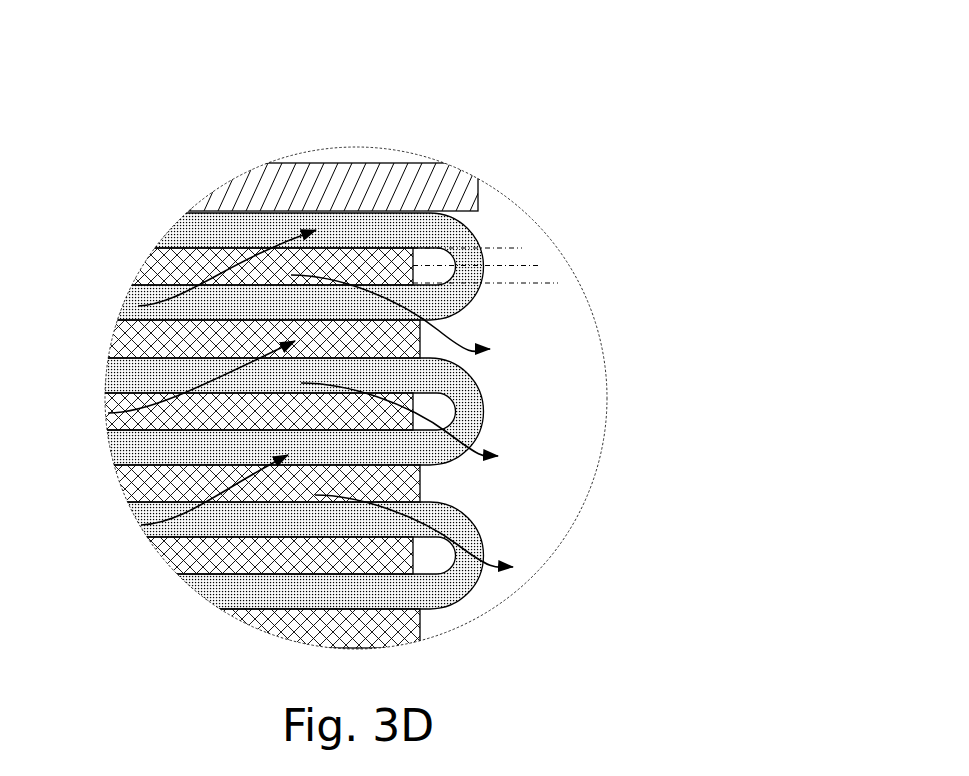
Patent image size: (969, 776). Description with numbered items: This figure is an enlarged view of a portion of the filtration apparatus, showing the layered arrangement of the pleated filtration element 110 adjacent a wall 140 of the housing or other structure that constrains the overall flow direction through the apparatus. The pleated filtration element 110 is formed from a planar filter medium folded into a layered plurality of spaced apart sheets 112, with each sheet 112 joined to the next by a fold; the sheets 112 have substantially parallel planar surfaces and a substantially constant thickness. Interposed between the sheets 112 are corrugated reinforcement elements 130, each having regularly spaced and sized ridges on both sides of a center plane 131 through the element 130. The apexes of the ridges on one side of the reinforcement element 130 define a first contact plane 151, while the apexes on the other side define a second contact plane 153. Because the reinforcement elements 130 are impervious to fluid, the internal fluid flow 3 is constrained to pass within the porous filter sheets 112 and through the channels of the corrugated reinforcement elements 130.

The internal fluid flow 3 is at (130, 298).
The pleated filtration element 110 is at (387, 207).
The sheets 112 is at (232, 207).
The corrugated reinforcement element 130 is at (261, 388).
The center plane 131 is at (533, 257).
The walls 140 is at (318, 155).
The first contact plane 151 is at (514, 240).
The second contact plane 153 is at (533, 277).